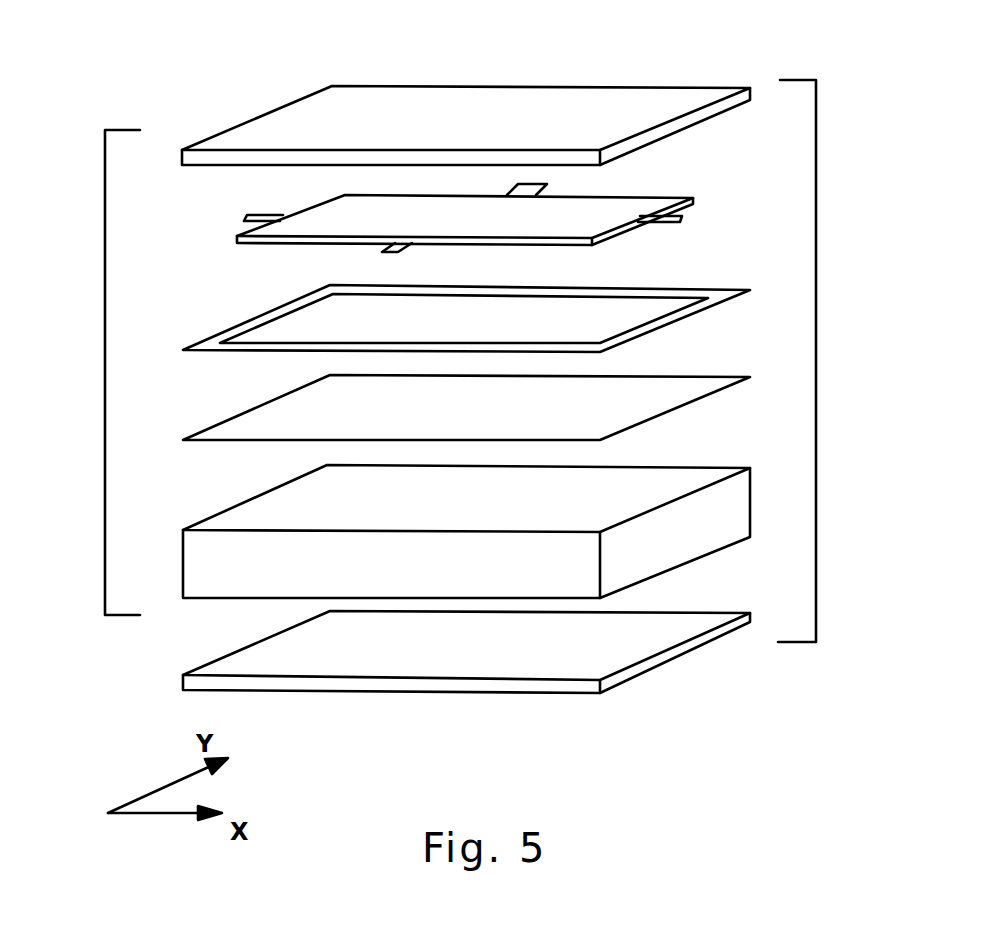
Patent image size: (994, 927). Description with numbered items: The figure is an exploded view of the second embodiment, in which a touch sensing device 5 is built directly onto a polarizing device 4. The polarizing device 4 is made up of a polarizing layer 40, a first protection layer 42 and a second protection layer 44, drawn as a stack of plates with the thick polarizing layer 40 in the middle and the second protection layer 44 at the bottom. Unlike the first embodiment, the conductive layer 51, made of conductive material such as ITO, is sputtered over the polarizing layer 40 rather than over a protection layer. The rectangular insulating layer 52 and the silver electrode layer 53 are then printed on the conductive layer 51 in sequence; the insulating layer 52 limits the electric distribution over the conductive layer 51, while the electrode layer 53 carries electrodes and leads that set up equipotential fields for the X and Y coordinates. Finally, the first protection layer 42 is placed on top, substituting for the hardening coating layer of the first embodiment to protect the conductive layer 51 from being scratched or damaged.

The polarizing device 4 is at (816, 375).
The touch sensing device 5 is at (104, 375).
The polarizing layer 40 is at (687, 478).
The first protection layer 42 is at (625, 105).
The second protection layer 44 is at (638, 640).
The conductive layer 51 is at (667, 388).
The insulating layer 52 is at (722, 298).
The electrode layer 53 is at (652, 197).